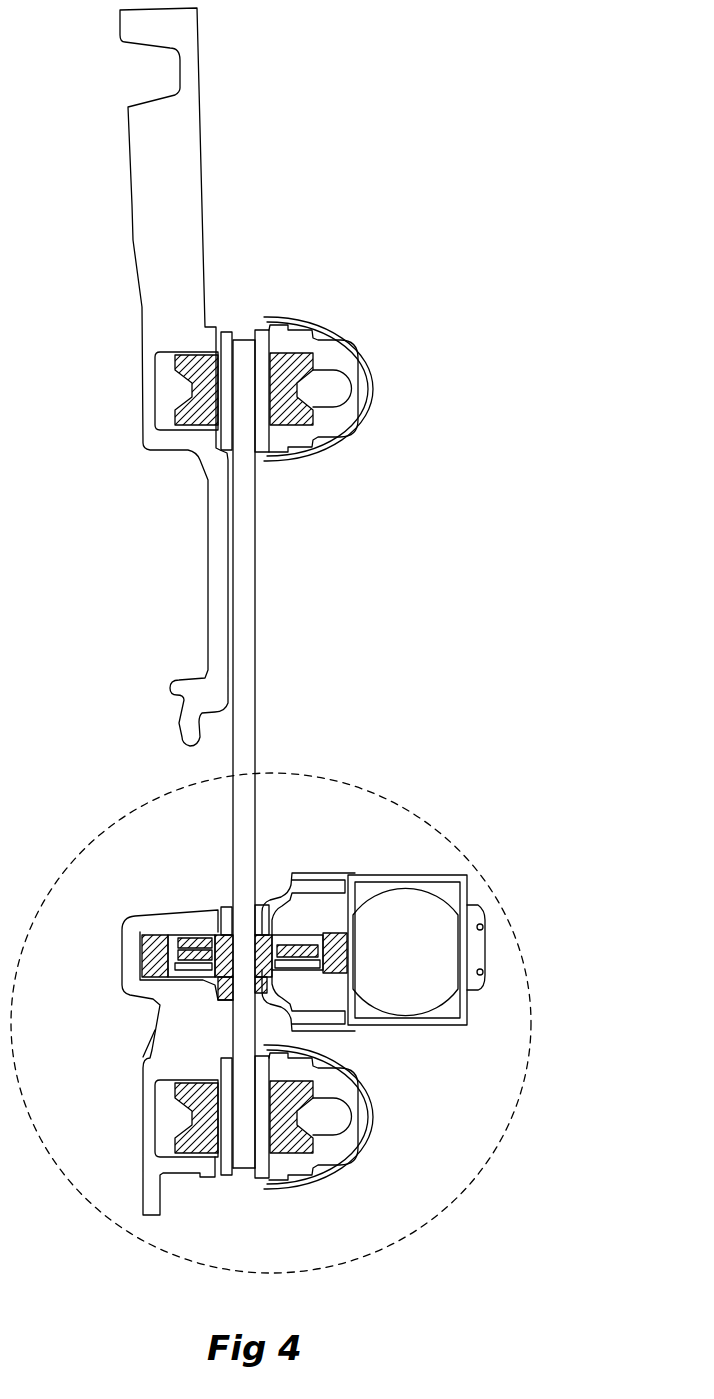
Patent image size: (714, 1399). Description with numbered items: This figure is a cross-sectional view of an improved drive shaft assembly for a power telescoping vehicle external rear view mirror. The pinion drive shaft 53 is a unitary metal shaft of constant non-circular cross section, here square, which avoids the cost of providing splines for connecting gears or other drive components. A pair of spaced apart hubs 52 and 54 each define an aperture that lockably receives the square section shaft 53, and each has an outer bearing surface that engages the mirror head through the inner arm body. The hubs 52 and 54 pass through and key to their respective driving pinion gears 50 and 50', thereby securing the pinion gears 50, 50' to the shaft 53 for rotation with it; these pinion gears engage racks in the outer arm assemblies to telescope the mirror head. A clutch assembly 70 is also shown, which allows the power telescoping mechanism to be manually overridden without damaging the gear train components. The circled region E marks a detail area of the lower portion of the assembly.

The driving pinion gear 50 is at (125, 397).
The driving pinion gear 50' is at (140, 1097).
The hub 52 is at (268, 342).
The pinion drive shaft 53 is at (245, 618).
The hub 54 is at (224, 1168).
The clutch assembly 70 is at (178, 928).
The detail region E is at (472, 860).